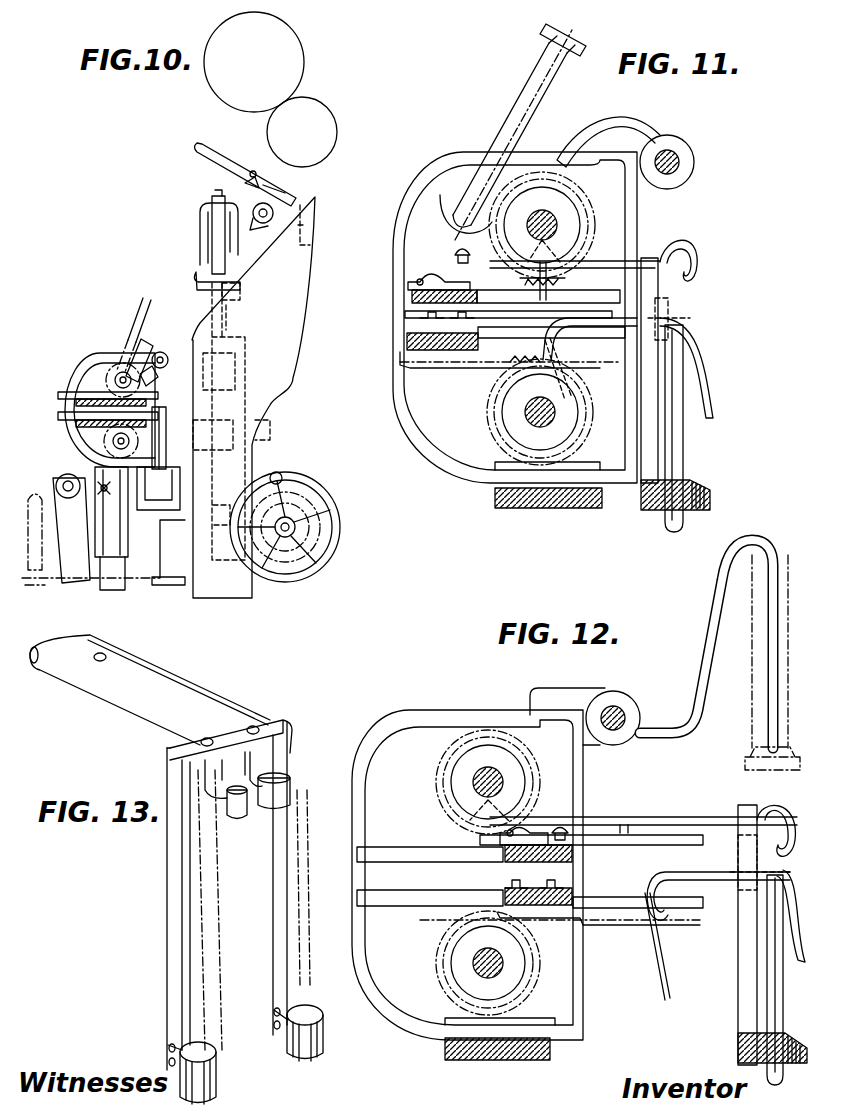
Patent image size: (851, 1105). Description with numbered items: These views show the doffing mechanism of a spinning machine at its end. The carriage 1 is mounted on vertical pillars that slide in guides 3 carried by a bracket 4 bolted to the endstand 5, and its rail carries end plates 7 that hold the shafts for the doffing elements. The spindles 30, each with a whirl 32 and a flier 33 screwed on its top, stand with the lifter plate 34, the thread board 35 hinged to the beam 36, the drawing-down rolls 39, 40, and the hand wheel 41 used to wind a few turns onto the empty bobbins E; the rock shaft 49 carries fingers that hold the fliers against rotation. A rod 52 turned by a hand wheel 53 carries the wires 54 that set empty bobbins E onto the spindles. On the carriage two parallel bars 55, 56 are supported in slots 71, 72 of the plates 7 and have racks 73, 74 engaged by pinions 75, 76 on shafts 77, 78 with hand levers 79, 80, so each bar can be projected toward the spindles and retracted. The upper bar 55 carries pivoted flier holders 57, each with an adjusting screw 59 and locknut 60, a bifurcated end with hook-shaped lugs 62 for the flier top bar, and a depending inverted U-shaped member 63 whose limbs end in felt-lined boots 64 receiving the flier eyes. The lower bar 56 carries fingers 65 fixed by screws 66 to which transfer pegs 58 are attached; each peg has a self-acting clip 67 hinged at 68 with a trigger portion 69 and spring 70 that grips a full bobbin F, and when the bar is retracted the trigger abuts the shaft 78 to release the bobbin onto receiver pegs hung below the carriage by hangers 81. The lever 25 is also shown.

In FIG. 10, the carriage 1 is at (88, 352).
In FIG. 10, the guides 3 is at (111, 528).
In FIG. 10, the bracket 4 is at (170, 586).
In FIG. 10, the endstand 5 is at (253, 397).
In FIG. 10, the end plates and intermediate plates 7 is at (88, 372).
In FIG. 11, the end plates and intermediate plates 7 is at (442, 170).
In FIG. 12, the end plates and intermediate plates 7 is at (467, 885).
In FIG. 10, the lever 25 is at (71, 528).
In FIG. 10, the spindles 30 is at (226, 320).
In FIG. 10, the whirl 32 is at (258, 430).
In FIG. 10, the flier 33 is at (200, 220).
In FIG. 13, the flier 33 is at (200, 910).
In FIG. 10, the lifter plate 34 is at (249, 297).
In FIG. 10, the thread board 35 is at (242, 165).
In FIG. 10, the beam 36 is at (288, 182).
In FIG. 10, the drawing-down roll 39 is at (302, 132).
In FIG. 10, the drawing-down roll 40 is at (254, 62).
In FIG. 10, the hand wheel 41 is at (308, 488).
In FIG. 10, the rock shaft 49 is at (268, 222).
In FIG. 10, the rod or shaft 52 is at (172, 350).
In FIG. 11, the rod or shaft 52 is at (680, 152).
In FIG. 12, the rod or shaft 52 is at (626, 708).
In FIG. 10, the hand wheel 53 is at (158, 375).
In FIG. 10, the wires 54 is at (140, 327).
In FIG. 11, the wires 54 is at (540, 88).
In FIG. 12, the wires 54 is at (720, 568).
In FIG. 10, the upper bar 55 is at (60, 395).
In FIG. 11, the upper bar 55 is at (408, 286).
In FIG. 12, the upper bar 55 is at (500, 840).
In FIG. 10, the lower bar 56 is at (60, 416).
In FIG. 11, the lower bar 56 is at (407, 342).
In FIG. 12, the lower bar 56 is at (505, 892).
In FIG. 11, the flier holder 57 is at (598, 280).
In FIG. 12, the flier holder 57 is at (688, 818).
In FIG. 13, the flier holder 57 is at (161, 697).
In FIG. 11, the transfer bobbin-peg 58 is at (680, 458).
In FIG. 12, the transfer bobbin-peg 58 is at (776, 982).
In FIG. 11, the adjusting screw 59 is at (455, 252).
In FIG. 12, the adjusting screw 59 is at (572, 830).
In FIG. 11, the locknut 60 is at (541, 254).
In FIG. 12, the locknut 60 is at (520, 795).
In FIG. 11, the hook-shaped lugs 62 is at (698, 268).
In FIG. 12, the hook-shaped lugs 62 is at (800, 826).
In FIG. 13, the hook-shaped lugs 62 is at (238, 820).
In FIG. 11, the inverted U-shaped member 63 is at (652, 400).
In FIG. 12, the inverted U-shaped member 63 is at (746, 985).
In FIG. 13, the inverted U-shaped member 63 is at (275, 860).
In FIG. 11, the boot or ring 64 is at (708, 500).
In FIG. 12, the boot or ring 64 is at (770, 1060).
In FIG. 13, the boot or ring 64 is at (258, 1052).
In FIG. 11, the plates or fingers 65 is at (508, 323).
In FIG. 12, the plates or fingers 65 is at (617, 846).
In FIG. 11, the screws 66 is at (420, 316).
In FIG. 12, the screws 66 is at (508, 880).
In FIG. 10, the self-acting clip 67 is at (176, 438).
In FIG. 11, the self-acting clip 67 is at (708, 364).
In FIG. 12, the self-acting clip 67 is at (792, 942).
In FIG. 11, the hinge point 68 is at (690, 320).
In FIG. 12, the hinge point 68 is at (743, 878).
In FIG. 11, the trigger portion 69 is at (585, 412).
In FIG. 12, the trigger portion 69 is at (664, 975).
In FIG. 11, the spring 70 is at (566, 345).
In FIG. 12, the spring 70 is at (660, 900).
In FIG. 11, the groove or slot 71 is at (632, 285).
In FIG. 12, the groove or slot 71 is at (398, 852).
In FIG. 11, the groove or slot 72 is at (551, 344).
In FIG. 12, the groove or slot 72 is at (405, 895).
In FIG. 11, the rack surface 73 is at (540, 300).
In FIG. 12, the rack surface 73 is at (625, 836).
In FIG. 11, the rack surface 74 is at (442, 372).
In FIG. 12, the rack surface 74 is at (608, 928).
In FIG. 11, the pinion 75 is at (572, 215).
In FIG. 12, the pinion 75 is at (486, 740).
In FIG. 11, the pinion 76 is at (578, 448).
In FIG. 12, the pinion 76 is at (520, 990).
In FIG. 10, the shaft 77 is at (120, 372).
In FIG. 11, the shaft 77 is at (543, 210).
In FIG. 12, the shaft 77 is at (505, 775).
In FIG. 10, the shaft 78 is at (112, 443).
In FIG. 11, the shaft 78 is at (527, 400).
In FIG. 12, the shaft 78 is at (505, 960).
In FIG. 10, the hand lever 79 is at (152, 345).
In FIG. 10, the hand lever 80 is at (104, 488).
In FIG. 10, the hangers 81 is at (180, 480).
In FIG. 10, the empty bobbins E is at (212, 250).
In FIG. 11, the empty bobbins E is at (506, 100).
In FIG. 12, the empty bobbins E is at (753, 698).
In FIG. 10, the full bobbins F is at (30, 570).